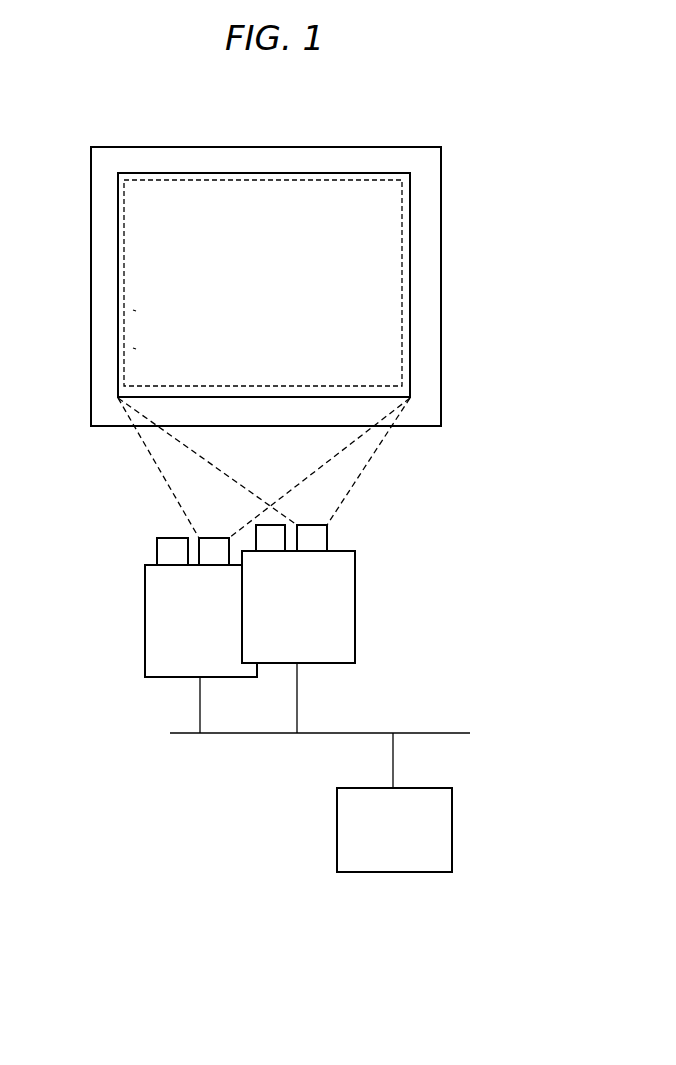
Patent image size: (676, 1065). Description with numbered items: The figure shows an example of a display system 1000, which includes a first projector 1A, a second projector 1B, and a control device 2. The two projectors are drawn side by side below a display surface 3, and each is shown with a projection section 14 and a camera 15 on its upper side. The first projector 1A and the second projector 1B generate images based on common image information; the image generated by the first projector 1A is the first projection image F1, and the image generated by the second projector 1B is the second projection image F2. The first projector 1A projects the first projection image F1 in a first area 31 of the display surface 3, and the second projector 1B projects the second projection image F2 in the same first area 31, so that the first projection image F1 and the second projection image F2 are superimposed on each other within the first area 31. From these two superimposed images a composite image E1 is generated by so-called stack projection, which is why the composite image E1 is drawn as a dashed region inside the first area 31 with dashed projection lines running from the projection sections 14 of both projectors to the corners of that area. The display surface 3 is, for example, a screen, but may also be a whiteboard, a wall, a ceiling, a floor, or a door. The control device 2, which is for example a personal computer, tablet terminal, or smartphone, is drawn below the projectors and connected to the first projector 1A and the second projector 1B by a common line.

The display system 1000 is at (497, 473).
The display surface 3 is at (422, 147).
The first area 31 is at (302, 173).
The composite image E1 is at (245, 180).
The first projection image F1 is at (133, 310).
The second projection image F2 is at (133, 348).
The first projector 1A is at (181, 680).
The second projector 1B is at (285, 668).
The camera 15 is at (157, 552).
The projection section 14 is at (212, 557).
The control device 2 is at (453, 825).